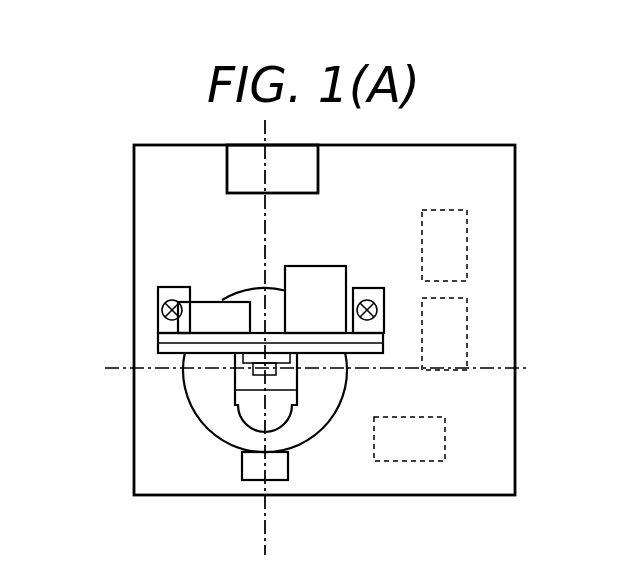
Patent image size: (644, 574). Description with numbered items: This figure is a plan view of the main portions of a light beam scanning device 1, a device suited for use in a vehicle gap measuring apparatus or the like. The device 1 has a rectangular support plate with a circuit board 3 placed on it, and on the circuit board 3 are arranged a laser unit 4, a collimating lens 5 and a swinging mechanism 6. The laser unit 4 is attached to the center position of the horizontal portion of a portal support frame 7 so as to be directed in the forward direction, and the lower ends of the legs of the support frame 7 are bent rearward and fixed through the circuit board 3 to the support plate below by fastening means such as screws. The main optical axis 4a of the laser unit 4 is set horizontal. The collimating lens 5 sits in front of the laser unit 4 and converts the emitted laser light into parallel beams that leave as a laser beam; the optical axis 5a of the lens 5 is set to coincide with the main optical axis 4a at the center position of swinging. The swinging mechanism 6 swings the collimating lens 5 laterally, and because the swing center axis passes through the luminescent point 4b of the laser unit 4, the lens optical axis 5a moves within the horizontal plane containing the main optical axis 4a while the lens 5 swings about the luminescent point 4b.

The light beam scanning device 1 is at (562, 189).
The circuit board 3 is at (515, 258).
The laser unit 4 is at (277, 373).
The main optical axis 4a is at (265, 523).
The luminescent point 4b is at (258, 353).
The collimating lens 5 is at (282, 430).
The optical axis of the lens 5a is at (316, 337).
The swinging mechanism 6 is at (159, 402).
The portal support frame 7 is at (383, 345).